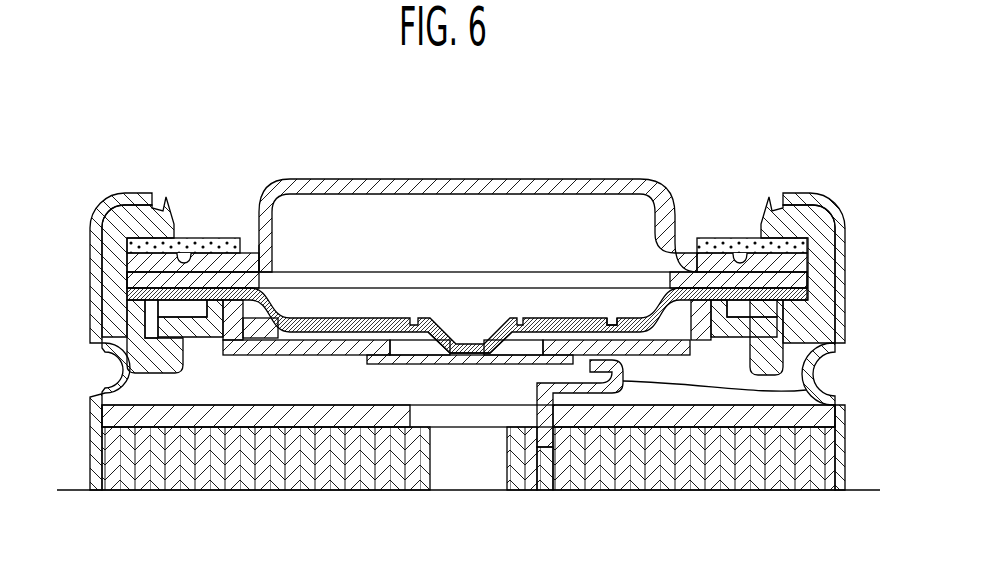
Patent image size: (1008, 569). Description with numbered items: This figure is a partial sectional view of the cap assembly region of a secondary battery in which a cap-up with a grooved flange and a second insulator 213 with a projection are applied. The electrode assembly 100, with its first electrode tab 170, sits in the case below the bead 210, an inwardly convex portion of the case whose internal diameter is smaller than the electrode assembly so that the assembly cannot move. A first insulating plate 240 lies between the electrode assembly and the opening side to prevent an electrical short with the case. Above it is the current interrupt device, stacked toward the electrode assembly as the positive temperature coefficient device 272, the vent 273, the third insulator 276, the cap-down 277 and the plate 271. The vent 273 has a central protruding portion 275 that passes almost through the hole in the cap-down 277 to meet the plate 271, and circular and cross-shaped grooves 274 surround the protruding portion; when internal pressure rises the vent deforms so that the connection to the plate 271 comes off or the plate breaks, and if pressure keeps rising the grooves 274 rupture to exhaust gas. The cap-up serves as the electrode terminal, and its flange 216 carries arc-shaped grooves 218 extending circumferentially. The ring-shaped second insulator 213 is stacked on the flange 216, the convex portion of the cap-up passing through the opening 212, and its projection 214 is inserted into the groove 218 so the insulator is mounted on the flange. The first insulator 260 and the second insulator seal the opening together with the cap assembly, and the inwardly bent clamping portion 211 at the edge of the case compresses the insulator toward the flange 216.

The electrode assembly 100 is at (92, 455).
The first electrode tab 170 is at (804, 381).
The bead 210 is at (108, 366).
The clamping portion 211 is at (110, 203).
The opening 212 is at (249, 250).
The second insulator 213 is at (710, 238).
The projection 214 is at (150, 247).
The flange 216 is at (806, 242).
The groove 218 is at (750, 253).
The first insulating plate 240 is at (127, 418).
The first insulator 260 is at (823, 270).
The plate 271 is at (534, 384).
The positive temperature coefficient device 272 is at (798, 283).
The vent 273 is at (145, 300).
The grooves 274 is at (612, 305).
The protruding portion 275 is at (460, 356).
The third insulator 276 is at (215, 330).
The cap-down 277 is at (347, 342).